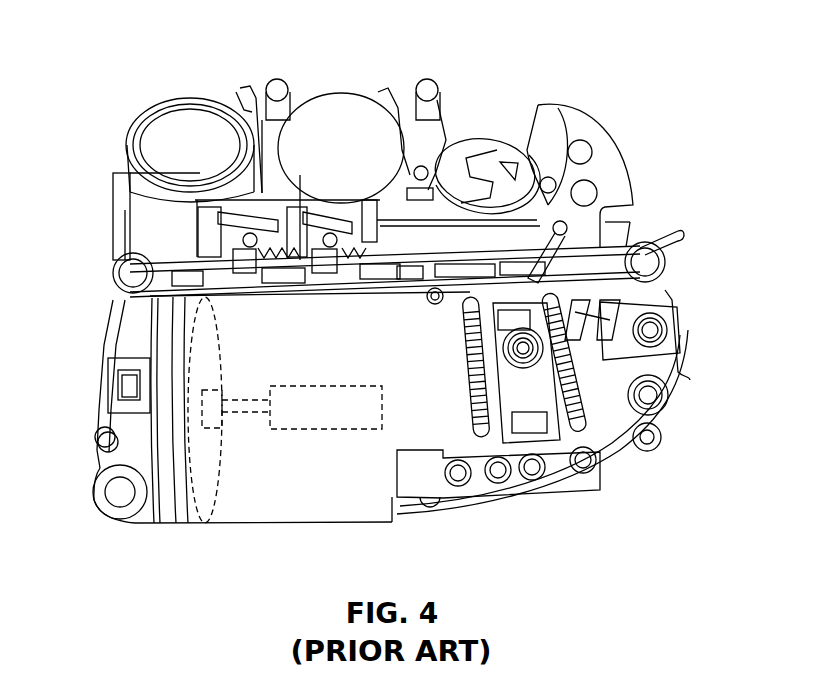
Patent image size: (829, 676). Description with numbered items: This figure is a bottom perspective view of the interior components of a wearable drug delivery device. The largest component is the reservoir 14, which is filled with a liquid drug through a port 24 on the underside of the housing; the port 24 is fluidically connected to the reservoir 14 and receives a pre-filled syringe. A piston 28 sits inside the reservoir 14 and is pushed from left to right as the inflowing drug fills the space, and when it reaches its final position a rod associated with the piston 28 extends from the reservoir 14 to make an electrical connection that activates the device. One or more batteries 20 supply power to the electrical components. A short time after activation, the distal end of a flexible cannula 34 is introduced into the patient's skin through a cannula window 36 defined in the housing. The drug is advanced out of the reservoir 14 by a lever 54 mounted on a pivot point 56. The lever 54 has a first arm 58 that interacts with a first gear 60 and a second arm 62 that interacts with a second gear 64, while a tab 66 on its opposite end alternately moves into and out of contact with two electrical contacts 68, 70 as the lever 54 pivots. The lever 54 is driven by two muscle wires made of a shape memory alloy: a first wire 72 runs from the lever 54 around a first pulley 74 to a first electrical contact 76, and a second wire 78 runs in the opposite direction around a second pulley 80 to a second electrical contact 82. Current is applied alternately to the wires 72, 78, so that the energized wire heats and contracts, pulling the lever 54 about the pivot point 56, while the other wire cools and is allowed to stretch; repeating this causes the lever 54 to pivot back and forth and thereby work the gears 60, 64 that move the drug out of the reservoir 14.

The reservoir 14 is at (325, 495).
The batteries 20 is at (325, 115).
The port 24 is at (97, 497).
The piston 28 is at (207, 473).
The cannula 34 is at (660, 233).
The cannula window 36 is at (620, 207).
The lever 54 is at (530, 390).
The pivot point 56 is at (525, 350).
The first arm 58 is at (462, 290).
The first gear 60 is at (470, 397).
The second arm 62 is at (567, 322).
The second gear 64 is at (587, 412).
The tab 66 is at (553, 468).
The electrical contact 68 is at (588, 472).
The electrical contact 70 is at (500, 472).
The first wire 72 is at (190, 272).
The first pulley 74 is at (125, 275).
The first electrical contact 76 is at (250, 240).
The second wire 78 is at (582, 245).
The second pulley 80 is at (647, 263).
The second electrical contact 82 is at (331, 242).